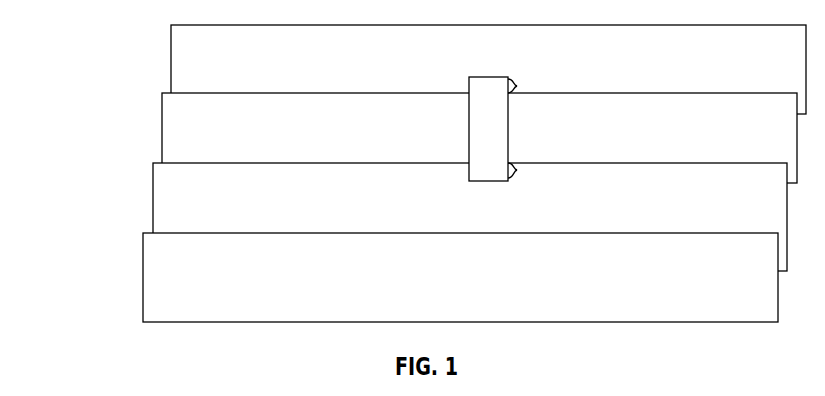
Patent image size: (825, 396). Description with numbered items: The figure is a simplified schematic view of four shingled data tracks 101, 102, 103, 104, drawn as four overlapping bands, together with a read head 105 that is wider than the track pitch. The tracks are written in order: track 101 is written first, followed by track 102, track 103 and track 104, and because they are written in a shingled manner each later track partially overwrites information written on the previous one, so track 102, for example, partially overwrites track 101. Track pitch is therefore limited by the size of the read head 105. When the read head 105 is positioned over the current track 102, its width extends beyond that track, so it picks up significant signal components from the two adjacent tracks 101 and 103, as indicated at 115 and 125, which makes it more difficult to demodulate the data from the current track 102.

The shingled data track 101 is at (171, 58).
The shingled data track 102 is at (162, 127).
The shingled data track 103 is at (153, 199).
The shingled data track 104 is at (143, 278).
The read head 105 is at (469, 130).
The adjacent-track signal component 115 is at (517, 86).
The adjacent-track signal component 125 is at (517, 170).